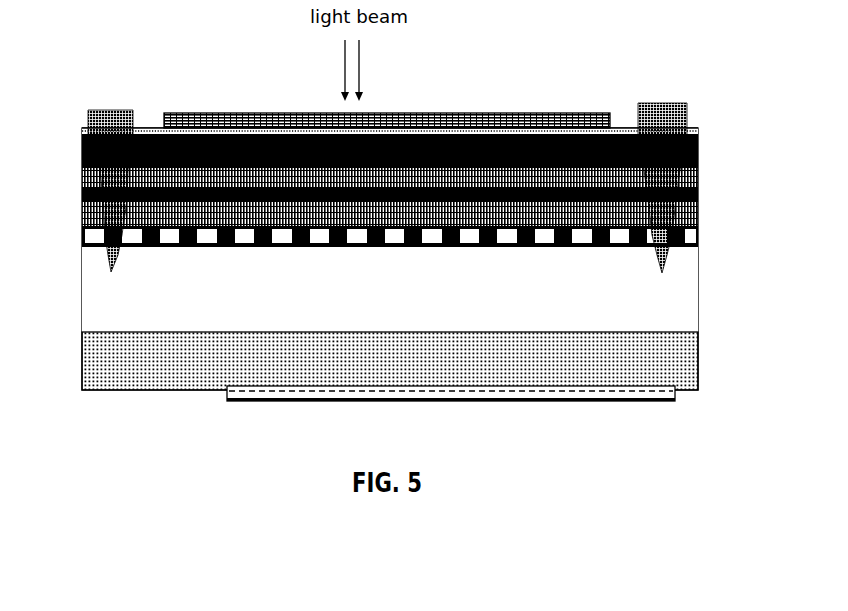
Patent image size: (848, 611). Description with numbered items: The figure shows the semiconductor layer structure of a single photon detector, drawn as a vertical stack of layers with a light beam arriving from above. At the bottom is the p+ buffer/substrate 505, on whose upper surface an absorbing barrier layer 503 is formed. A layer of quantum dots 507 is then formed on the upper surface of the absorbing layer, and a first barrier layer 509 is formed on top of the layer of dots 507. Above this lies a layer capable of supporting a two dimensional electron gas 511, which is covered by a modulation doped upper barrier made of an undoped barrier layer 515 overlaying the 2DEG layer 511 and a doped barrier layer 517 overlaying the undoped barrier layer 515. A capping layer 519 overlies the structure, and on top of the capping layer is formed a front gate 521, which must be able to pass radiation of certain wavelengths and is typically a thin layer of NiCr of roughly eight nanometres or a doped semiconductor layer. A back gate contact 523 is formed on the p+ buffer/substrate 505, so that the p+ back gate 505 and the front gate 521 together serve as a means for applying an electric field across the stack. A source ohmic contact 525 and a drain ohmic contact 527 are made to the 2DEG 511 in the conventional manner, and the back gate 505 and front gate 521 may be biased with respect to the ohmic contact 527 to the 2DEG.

The absorbing barrier layer 503 is at (86, 311).
The p+ substrate 505 is at (86, 351).
The layer of quantum dots 507 is at (72, 237).
The first barrier layer 509 is at (700, 223).
The two dimensional electron gas layer 511 is at (700, 201).
The undoped barrier layer 515 is at (700, 181).
The doped barrier layer 517 is at (700, 162).
The capping layer 519 is at (700, 131).
The front gate 521 is at (222, 114).
The back gate contact 523 is at (228, 401).
The source ohmic contact 525 is at (92, 112).
The drain ohmic contact 527 is at (678, 109).